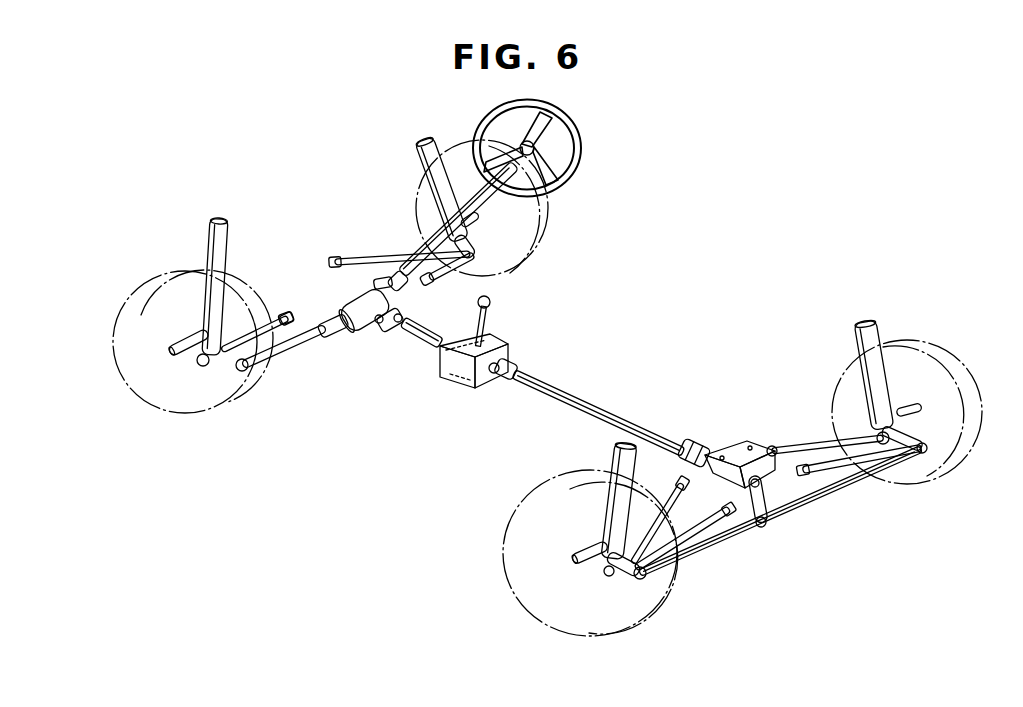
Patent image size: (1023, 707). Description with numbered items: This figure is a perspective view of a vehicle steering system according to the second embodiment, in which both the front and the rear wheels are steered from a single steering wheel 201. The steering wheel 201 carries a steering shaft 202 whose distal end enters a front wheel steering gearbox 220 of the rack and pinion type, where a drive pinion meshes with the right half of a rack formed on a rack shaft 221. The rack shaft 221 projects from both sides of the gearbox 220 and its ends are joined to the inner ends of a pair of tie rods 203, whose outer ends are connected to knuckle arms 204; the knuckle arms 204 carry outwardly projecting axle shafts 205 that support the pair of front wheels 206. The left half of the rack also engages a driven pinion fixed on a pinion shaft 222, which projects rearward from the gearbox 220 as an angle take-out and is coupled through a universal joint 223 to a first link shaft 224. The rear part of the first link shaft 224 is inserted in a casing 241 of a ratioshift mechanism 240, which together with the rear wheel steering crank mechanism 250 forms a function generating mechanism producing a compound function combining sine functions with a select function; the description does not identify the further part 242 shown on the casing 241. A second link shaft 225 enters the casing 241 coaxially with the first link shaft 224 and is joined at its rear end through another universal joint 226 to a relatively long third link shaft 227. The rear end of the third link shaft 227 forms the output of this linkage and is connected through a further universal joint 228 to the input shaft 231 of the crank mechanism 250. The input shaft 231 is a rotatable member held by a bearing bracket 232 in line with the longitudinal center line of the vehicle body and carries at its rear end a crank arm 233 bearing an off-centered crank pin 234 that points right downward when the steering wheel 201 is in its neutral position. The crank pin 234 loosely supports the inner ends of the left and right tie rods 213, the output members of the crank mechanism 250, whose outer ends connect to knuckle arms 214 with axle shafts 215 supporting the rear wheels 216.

The steering wheel 201 is at (565, 125).
The steering shaft 202 is at (440, 248).
The tie rods 203 is at (470, 255).
The knuckle arms 204 is at (470, 262).
The axle shafts 205 is at (535, 220).
The front wheels 206 is at (545, 225).
The tie rods 213 is at (700, 555).
The knuckle arms 214 is at (632, 580).
The axle shafts 215 is at (585, 555).
The rear wheels 216 is at (556, 600).
The front wheel steering gearbox 220 is at (345, 318).
The rack shaft 221 is at (432, 282).
The pinion shaft 222 is at (388, 330).
The universal joint 223 is at (385, 320).
The first link shaft 224 is at (425, 335).
The second link shaft 225 is at (494, 376).
The universal joint 226 is at (512, 366).
The third link shaft 227 is at (605, 418).
The universal joint 228 is at (692, 442).
The input shaft 231 is at (775, 447).
The bearing bracket 232 is at (735, 445).
The crank arm 233 is at (768, 500).
The crank pin 234 is at (762, 528).
The ratioshift mechanism 240 is at (538, 320).
The casing 241 is at (458, 378).
The shift lever 242 is at (492, 300).
The rear wheel steering crank mechanism 250 is at (778, 490).